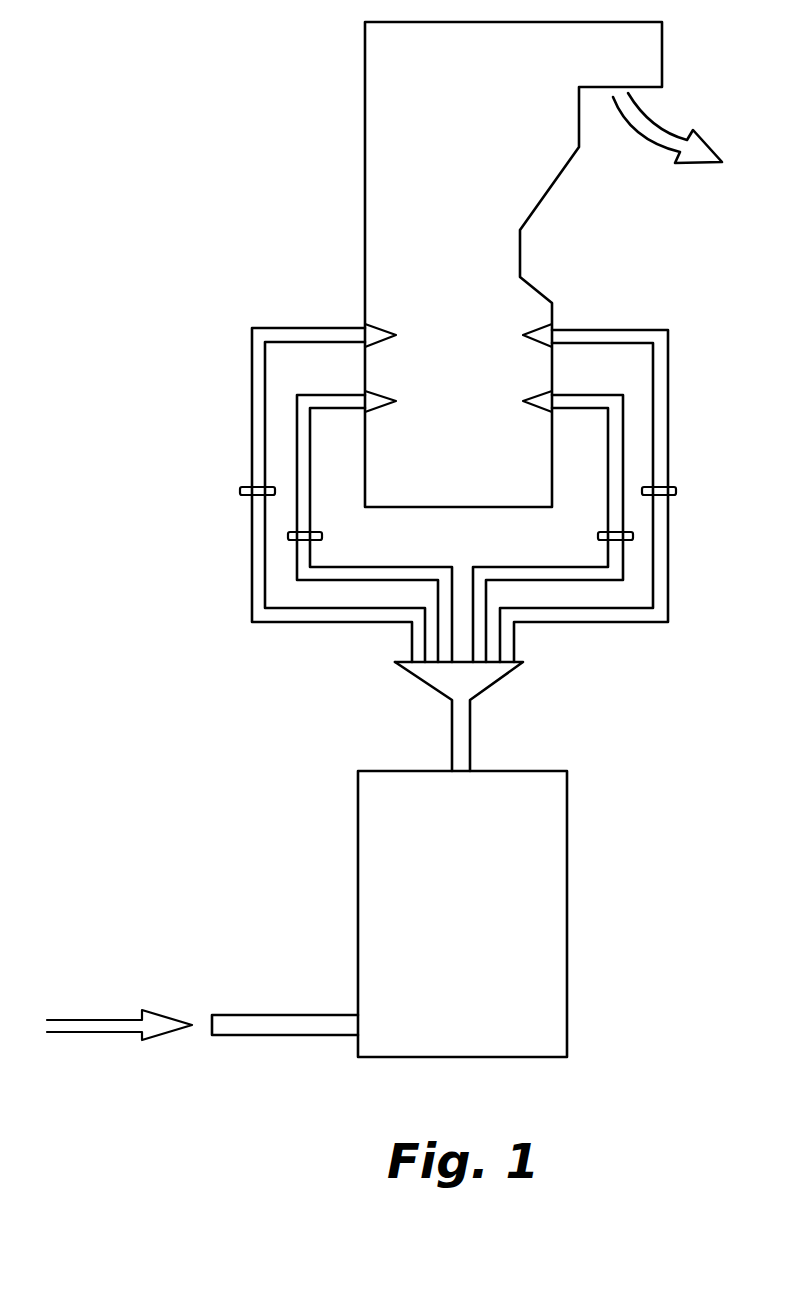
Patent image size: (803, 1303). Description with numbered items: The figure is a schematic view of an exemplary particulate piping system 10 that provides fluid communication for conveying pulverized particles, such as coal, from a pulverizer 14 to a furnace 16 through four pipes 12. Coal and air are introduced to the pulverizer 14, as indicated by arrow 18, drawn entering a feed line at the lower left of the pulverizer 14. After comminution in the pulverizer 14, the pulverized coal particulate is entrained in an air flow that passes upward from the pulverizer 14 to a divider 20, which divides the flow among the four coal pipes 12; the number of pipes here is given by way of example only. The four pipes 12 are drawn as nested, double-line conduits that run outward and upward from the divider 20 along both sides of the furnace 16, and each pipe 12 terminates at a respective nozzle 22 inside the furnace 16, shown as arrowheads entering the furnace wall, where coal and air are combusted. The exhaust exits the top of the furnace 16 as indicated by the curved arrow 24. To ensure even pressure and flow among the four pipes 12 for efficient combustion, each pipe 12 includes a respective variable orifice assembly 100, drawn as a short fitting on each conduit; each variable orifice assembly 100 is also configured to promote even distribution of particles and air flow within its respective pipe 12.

The particulate piping system 10 is at (171, 342).
The coal pipes 12 is at (308, 328).
The pulverizer 14 is at (462, 915).
The furnace 16 is at (483, 167).
The arrow indicating introduction of coal and air 18 is at (97, 1034).
The divider 20 is at (482, 682).
The nozzle 22 is at (381, 325).
The arrow indicating exhaust exit 24 is at (641, 133).
The variable orifice assembly 100 is at (240, 491).